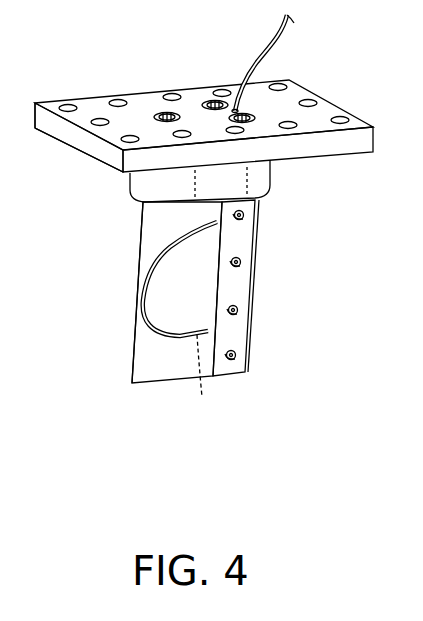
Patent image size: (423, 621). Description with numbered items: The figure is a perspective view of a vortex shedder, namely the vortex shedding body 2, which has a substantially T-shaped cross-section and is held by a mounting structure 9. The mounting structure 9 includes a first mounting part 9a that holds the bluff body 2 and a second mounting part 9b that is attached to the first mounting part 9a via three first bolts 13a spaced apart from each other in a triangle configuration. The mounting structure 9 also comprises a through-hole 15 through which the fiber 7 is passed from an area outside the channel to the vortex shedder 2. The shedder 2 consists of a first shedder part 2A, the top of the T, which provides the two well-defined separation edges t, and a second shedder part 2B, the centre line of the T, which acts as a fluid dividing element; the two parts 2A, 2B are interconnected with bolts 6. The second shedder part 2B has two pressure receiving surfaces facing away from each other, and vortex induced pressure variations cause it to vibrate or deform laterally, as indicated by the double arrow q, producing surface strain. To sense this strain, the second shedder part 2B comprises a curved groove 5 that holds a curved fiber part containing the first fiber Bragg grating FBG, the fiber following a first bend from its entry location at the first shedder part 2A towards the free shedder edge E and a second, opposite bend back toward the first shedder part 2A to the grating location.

The vortex shedding body 2 is at (191, 316).
The first shedder part 2A is at (228, 378).
The second shedder part 2B is at (145, 384).
The curved groove 5 is at (150, 267).
The bolts 6 is at (244, 216).
The fiber 7 is at (256, 58).
The mounting structure 9 is at (219, 109).
The first mounting part 9a is at (267, 183).
The second mounting part 9b is at (104, 162).
The first bolts 13a is at (165, 112).
The through-hole 15 is at (240, 108).
The separation edges t is at (253, 290).
The free shedder edge E is at (126, 327).
The lateral vibration/deformation direction q is at (163, 338).
The first fiber Bragg grating FBG is at (190, 379).